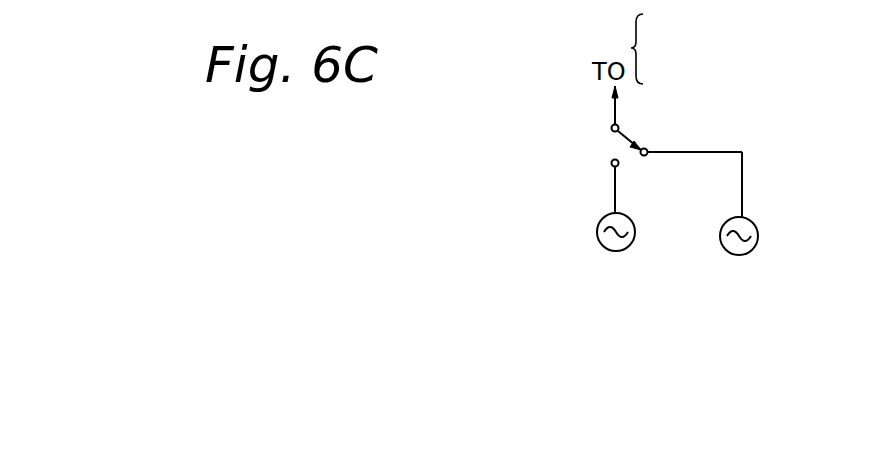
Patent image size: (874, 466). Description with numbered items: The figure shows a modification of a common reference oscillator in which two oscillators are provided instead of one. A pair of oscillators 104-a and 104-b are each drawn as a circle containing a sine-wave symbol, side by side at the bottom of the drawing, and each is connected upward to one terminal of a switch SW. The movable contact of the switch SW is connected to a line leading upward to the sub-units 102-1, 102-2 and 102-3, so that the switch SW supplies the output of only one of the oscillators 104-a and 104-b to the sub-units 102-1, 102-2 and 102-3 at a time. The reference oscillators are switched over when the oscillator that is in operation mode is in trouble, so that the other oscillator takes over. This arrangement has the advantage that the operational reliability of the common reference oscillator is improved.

The sub-unit 102-1 is at (681, 25).
The sub-unit 102-2 is at (681, 49).
The sub-unit 102-3 is at (681, 72).
The switch SW is at (646, 126).
The oscillator 104-a is at (597, 232).
The oscillator 104-b is at (758, 233).